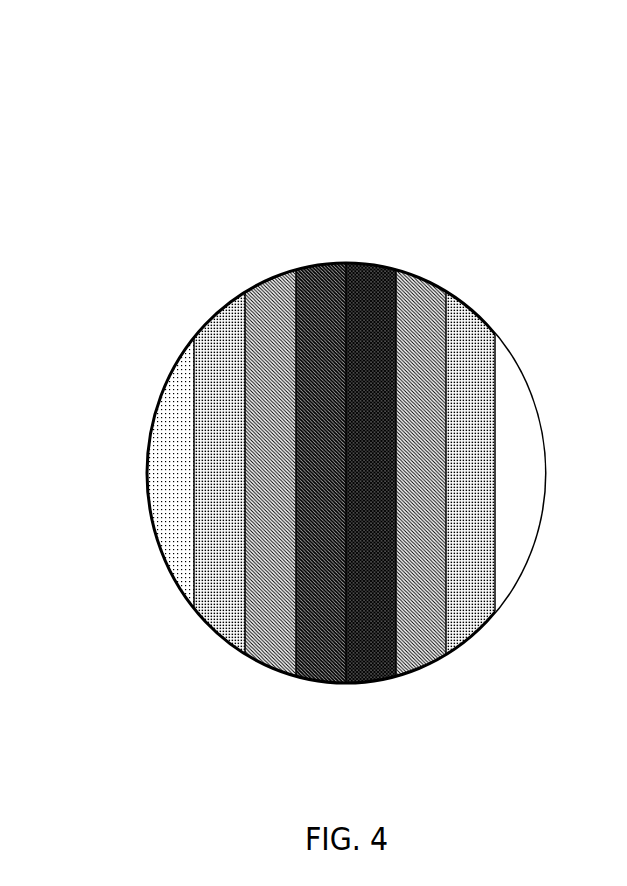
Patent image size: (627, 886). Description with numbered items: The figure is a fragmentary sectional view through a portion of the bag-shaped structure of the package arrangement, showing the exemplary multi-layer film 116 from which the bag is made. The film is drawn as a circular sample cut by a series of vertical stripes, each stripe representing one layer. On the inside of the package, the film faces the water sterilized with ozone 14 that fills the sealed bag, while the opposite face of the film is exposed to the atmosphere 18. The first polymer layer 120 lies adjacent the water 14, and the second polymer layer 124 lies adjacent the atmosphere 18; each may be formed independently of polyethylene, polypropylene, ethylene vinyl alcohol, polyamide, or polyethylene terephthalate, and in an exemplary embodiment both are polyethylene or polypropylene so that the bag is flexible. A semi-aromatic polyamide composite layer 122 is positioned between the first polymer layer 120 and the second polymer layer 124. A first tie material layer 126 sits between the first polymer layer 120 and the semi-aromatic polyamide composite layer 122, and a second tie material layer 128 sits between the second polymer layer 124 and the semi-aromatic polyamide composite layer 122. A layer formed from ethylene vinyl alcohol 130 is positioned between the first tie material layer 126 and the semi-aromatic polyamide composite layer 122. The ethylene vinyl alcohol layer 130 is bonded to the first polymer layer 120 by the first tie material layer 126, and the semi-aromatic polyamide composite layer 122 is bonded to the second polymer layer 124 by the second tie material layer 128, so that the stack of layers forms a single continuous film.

The multi-layer film 116 is at (378, 101).
The water sterilized with ozone 14 is at (165, 478).
The atmosphere 18 is at (507, 450).
The first polymer layer 120 is at (228, 352).
The semi-aromatic polyamide composite layer 122 is at (322, 283).
The second polymer layer 124 is at (465, 350).
The first tie material layer 126 is at (272, 307).
The second tie material layer 128 is at (422, 310).
The layer formed from ethylene vinyl alcohol 130 is at (370, 277).